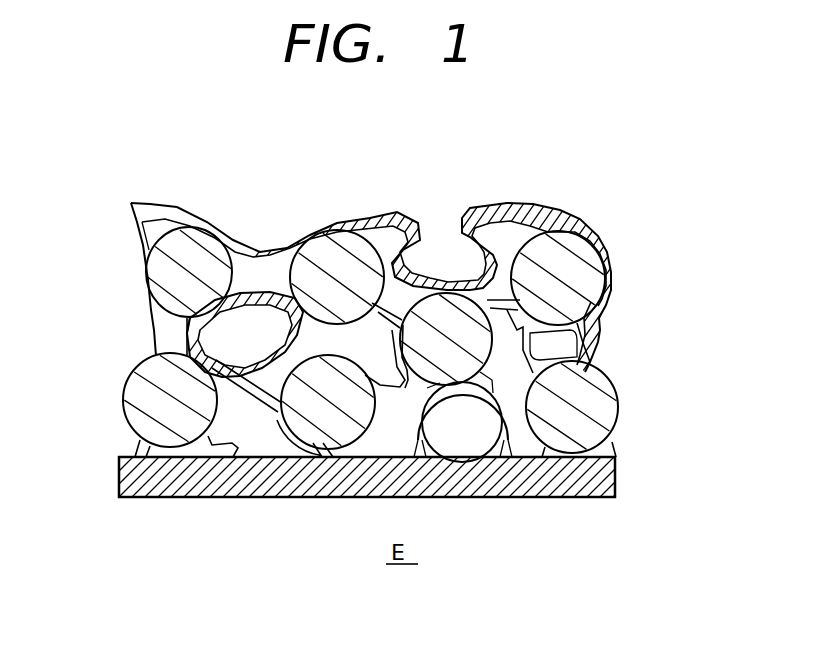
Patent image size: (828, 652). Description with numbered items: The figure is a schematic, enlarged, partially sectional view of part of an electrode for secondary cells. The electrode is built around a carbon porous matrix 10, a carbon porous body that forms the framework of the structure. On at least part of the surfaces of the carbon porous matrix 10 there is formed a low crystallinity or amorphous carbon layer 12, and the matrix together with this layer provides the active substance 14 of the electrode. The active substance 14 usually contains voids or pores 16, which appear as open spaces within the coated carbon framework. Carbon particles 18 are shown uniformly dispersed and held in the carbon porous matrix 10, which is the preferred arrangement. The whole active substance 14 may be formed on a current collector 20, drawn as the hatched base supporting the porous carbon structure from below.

The carbon porous matrix 10 is at (602, 323).
The amorphous carbon layer 12 is at (251, 320).
The active substance 14 is at (618, 337).
The pores 16 is at (220, 338).
The carbon particles 18 is at (618, 410).
The current collector 20 is at (310, 497).